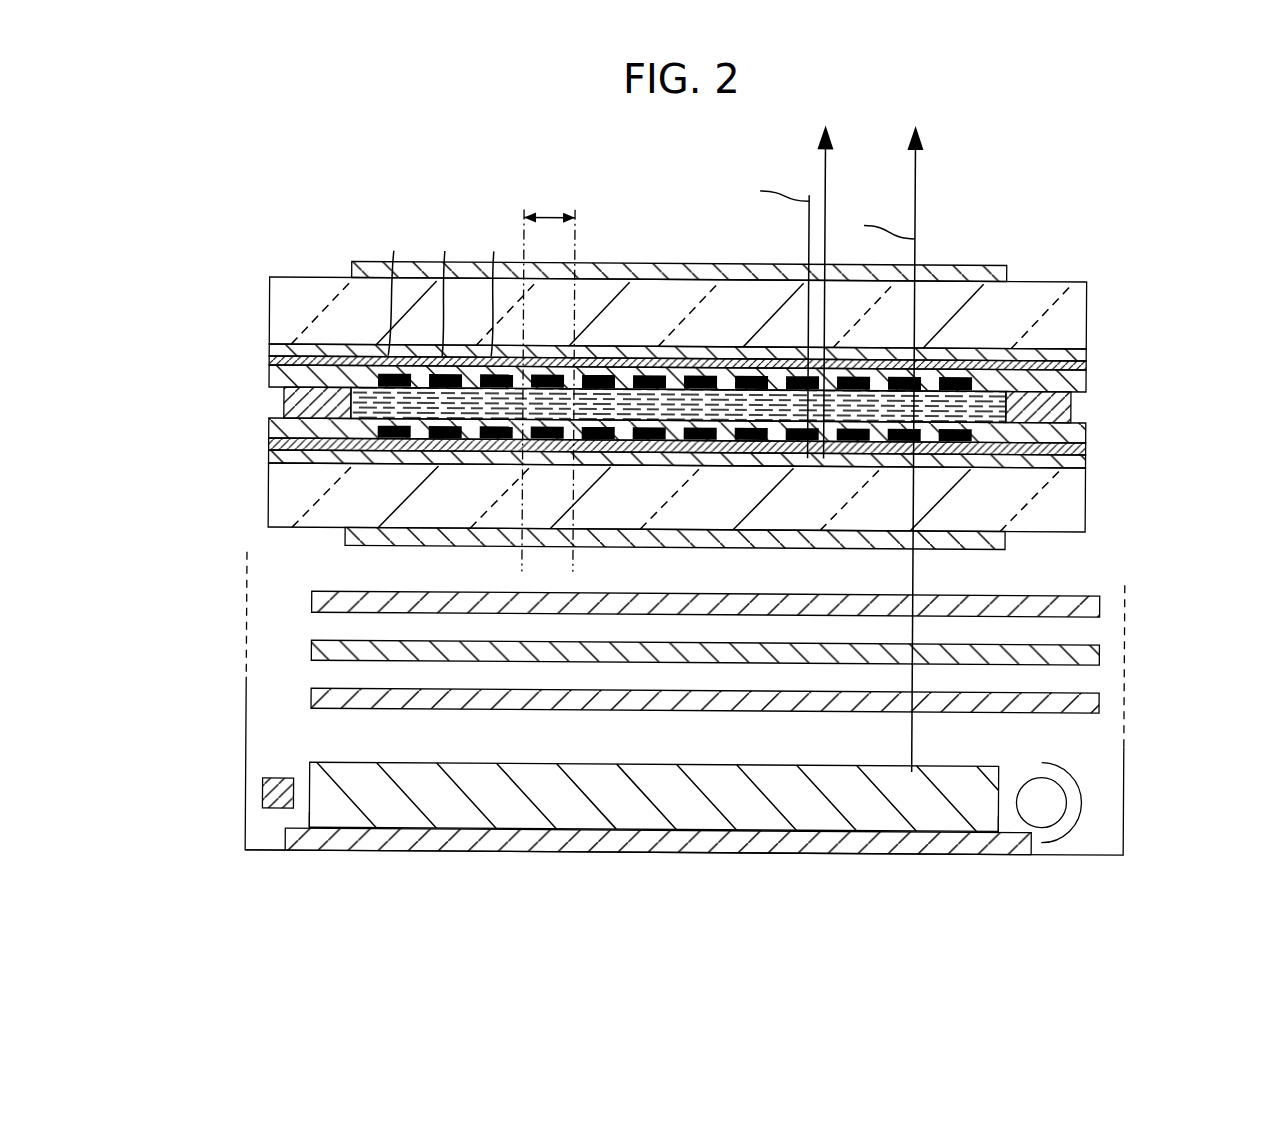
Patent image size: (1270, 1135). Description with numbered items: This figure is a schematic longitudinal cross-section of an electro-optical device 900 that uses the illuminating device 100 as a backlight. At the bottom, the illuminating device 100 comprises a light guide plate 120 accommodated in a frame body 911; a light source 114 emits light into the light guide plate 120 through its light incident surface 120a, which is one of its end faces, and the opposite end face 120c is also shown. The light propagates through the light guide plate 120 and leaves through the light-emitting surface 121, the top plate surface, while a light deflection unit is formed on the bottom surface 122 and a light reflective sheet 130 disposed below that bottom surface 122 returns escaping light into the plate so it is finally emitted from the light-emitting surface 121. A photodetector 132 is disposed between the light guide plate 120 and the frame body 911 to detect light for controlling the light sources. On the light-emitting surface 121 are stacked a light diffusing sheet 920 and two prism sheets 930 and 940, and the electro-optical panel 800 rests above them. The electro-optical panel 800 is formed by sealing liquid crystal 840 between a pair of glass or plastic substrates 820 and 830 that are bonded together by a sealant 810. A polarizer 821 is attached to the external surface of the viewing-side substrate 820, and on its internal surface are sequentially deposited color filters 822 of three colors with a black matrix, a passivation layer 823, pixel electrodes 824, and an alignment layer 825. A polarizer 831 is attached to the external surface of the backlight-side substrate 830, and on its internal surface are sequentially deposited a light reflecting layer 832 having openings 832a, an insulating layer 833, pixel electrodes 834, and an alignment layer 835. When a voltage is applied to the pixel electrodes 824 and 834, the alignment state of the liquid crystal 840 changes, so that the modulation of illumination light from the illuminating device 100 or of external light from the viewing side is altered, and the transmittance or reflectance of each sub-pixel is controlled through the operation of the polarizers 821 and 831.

The electro-optical device 900 is at (470, 158).
The electro-optical panel 800 is at (1193, 570).
The polarizer 821 is at (1005, 272).
The substrate 820 is at (278, 325).
The color filters 822 is at (1085, 360).
The passivation layer 823 is at (1085, 349).
The pixel electrodes 824 is at (957, 360).
The alignment layer 825 is at (1082, 382).
The sealant 810 is at (290, 395).
The liquid crystal 840 is at (350, 402).
The alignment layer 835 is at (272, 430).
The pixel electrodes 834 is at (1080, 462).
The insulating layer 833 is at (272, 445).
The light reflecting layer 832 is at (268, 458).
The openings 832a is at (705, 440).
The substrate 830 is at (1075, 502).
The polarizer 831 is at (1005, 540).
The prism sheet 940 is at (1100, 602).
The prism sheet 930 is at (1100, 650).
The light diffusing sheet 920 is at (1100, 698).
The frame body 911 is at (1125, 767).
The illuminating device 100 is at (1097, 836).
The light-emitting surface 121 is at (358, 762).
The photodetector 132 is at (264, 792).
The light reflective sheet 130 is at (290, 833).
The end face 120c is at (300, 812).
The bottom surface 122 is at (462, 830).
The light guide plate 120 is at (658, 830).
The light incident surface 120a is at (1013, 828).
The light source 114 is at (1050, 820).